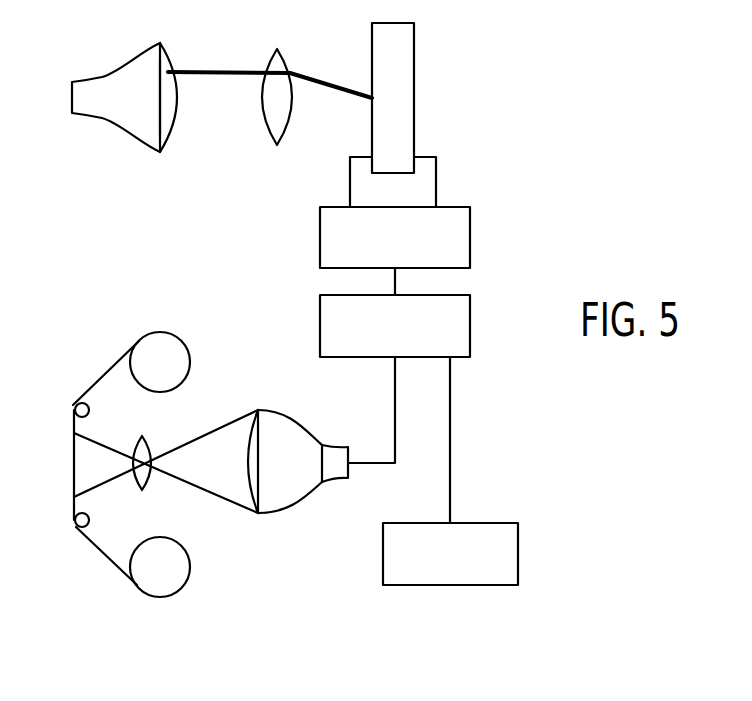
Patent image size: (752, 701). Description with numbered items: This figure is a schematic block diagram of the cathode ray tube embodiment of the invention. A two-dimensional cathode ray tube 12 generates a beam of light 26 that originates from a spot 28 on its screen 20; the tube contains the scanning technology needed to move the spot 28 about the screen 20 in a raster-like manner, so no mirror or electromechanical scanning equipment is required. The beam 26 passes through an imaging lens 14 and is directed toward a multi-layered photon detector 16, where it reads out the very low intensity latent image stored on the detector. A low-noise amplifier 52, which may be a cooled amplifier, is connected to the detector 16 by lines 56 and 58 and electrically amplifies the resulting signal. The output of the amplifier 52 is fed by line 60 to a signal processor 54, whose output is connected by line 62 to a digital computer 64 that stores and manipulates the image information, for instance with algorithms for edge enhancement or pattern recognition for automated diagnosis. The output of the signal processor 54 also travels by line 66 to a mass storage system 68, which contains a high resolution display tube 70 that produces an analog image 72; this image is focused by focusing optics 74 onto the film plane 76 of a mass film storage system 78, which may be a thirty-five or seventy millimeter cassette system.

The cathode ray tube 12 is at (128, 67).
The imaging lens 14 is at (282, 62).
The multi-layered photon detector 16 is at (415, 80).
The screen 20 is at (173, 137).
The beam of light 26 is at (232, 68).
The spot 28 is at (172, 68).
The amplifier 52 is at (470, 225).
The signal processor 54 is at (470, 312).
The line 56 is at (348, 185).
The line 58 is at (438, 188).
The line 60 is at (395, 283).
The line 62 is at (452, 420).
The digital computer 64 is at (520, 545).
The line 66 is at (392, 418).
The mass storage system 68 is at (246, 389).
The high resolution display tube 70 is at (300, 483).
The analog image 72 is at (190, 457).
The focusing optics 74 is at (145, 487).
The film plane 76 is at (75, 448).
The mass film storage system 78 is at (163, 345).